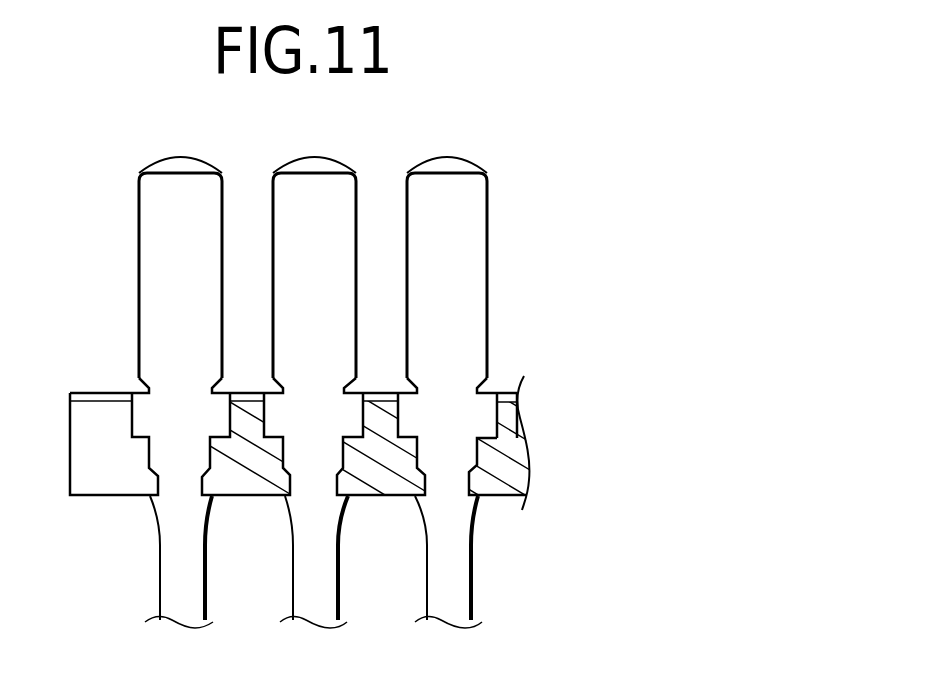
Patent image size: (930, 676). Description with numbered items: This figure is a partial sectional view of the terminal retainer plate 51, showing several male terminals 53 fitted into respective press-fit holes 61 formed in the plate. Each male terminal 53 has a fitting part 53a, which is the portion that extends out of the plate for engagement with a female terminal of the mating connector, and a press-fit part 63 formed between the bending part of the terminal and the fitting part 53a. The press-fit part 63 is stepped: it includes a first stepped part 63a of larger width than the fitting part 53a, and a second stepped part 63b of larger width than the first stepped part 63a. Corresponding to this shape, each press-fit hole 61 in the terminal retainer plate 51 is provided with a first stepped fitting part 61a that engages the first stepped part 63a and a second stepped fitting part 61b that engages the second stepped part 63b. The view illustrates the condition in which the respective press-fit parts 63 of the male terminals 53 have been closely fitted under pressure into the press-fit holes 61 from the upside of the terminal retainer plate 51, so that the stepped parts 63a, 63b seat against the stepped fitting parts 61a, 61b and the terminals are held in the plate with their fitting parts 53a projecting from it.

The terminal retainer plate 51 is at (98, 497).
The male terminal 53 is at (508, 205).
The fitting part 53a is at (463, 573).
The press-fit hole 61 is at (567, 365).
The first stepped fitting part 61a is at (477, 468).
The second stepped fitting part 61b is at (538, 378).
The press-fit part 63 is at (375, 338).
The first stepped part 63a is at (460, 472).
The second stepped part 63b is at (477, 428).